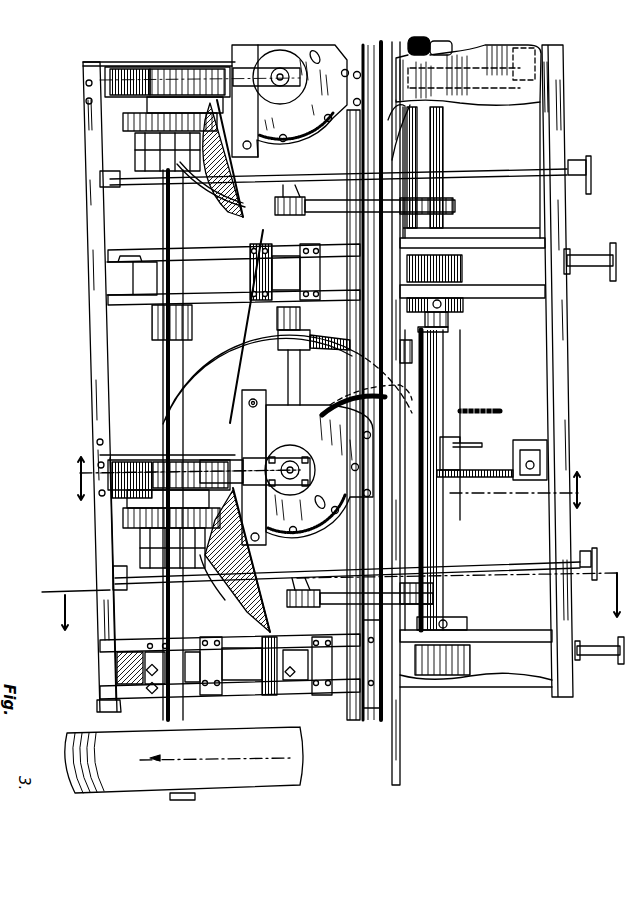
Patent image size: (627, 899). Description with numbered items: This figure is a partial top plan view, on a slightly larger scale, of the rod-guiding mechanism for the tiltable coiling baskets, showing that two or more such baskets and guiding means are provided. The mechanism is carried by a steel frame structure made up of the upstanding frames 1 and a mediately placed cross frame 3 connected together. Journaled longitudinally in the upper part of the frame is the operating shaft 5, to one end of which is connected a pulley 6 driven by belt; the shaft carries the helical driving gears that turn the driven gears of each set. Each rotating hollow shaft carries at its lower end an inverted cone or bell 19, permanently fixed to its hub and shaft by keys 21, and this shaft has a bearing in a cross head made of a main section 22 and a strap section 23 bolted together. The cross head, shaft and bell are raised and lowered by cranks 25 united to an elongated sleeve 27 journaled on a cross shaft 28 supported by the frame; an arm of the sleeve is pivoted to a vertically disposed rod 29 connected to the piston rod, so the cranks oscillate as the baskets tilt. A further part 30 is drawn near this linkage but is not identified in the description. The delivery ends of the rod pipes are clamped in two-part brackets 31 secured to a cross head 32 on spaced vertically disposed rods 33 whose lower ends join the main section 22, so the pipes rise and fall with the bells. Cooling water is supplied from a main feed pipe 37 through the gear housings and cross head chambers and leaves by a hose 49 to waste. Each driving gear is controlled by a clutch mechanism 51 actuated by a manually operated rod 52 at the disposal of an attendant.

The upstanding frame 1 is at (280, 280).
The cross frame 3 is at (326, 602).
The operating shaft 5 is at (175, 615).
The pulley 6 is at (300, 753).
The inverted cone or bell 19 is at (148, 133).
The keys 21 is at (92, 67).
The main section of cross head 22 is at (243, 366).
The strap section of cross head 23 is at (250, 95).
The cranks 25 is at (333, 200).
The elongated sleeve 27 is at (445, 118).
The cross shaft 28 is at (455, 208).
The vertically disposed rod 29 is at (527, 485).
The link 30 is at (350, 397).
The bracket 31 is at (290, 80).
The cross head 32 is at (258, 430).
The vertically disposed rods 33 is at (213, 600).
The main feed pipe 37 is at (392, 743).
The hose 49 is at (500, 410).
The clutch mechanism 51 is at (157, 530).
The manually operated rod 52 is at (517, 168).